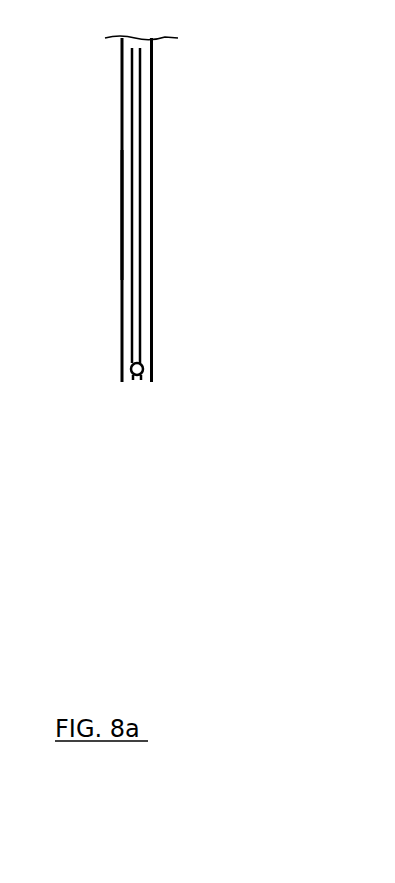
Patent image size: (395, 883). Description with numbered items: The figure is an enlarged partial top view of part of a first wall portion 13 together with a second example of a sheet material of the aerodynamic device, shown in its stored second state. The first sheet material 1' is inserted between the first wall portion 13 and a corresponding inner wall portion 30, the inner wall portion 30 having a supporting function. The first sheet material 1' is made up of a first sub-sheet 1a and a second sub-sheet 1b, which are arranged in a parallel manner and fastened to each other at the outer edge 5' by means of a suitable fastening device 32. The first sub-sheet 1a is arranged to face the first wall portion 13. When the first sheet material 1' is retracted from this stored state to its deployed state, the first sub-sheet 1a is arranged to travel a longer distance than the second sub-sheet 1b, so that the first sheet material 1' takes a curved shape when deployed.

The first sheet material 1' is at (91, 210).
The first wall portion 13 is at (121, 215).
The inner wall portion 30 is at (155, 172).
The first sub-sheet 1a is at (133, 293).
The second sub-sheet 1b is at (141, 277).
The fastening device 32 is at (150, 372).
The outer edge 5' is at (166, 428).